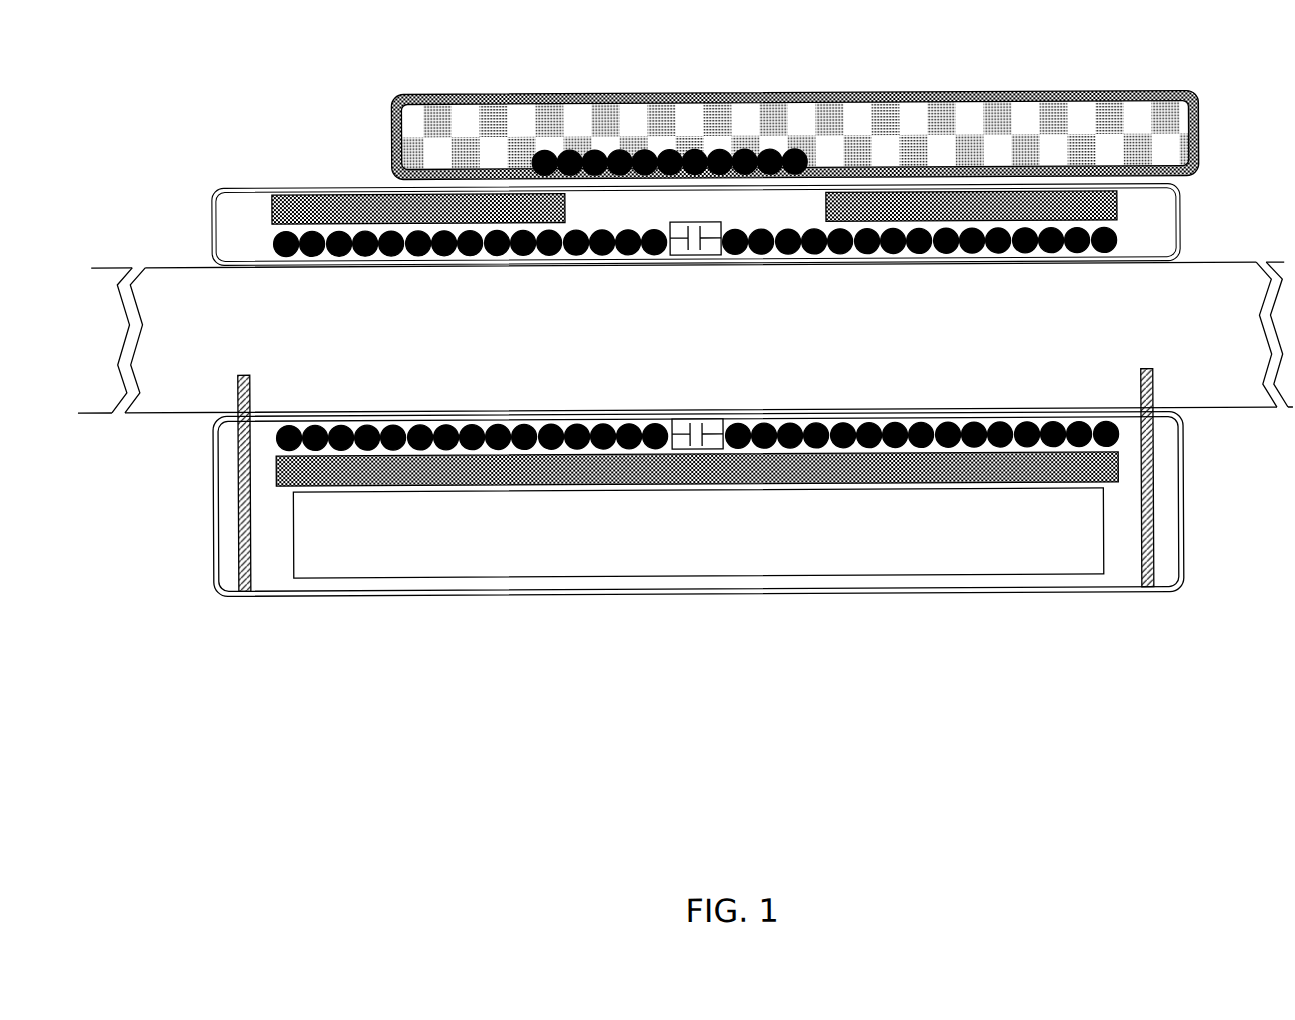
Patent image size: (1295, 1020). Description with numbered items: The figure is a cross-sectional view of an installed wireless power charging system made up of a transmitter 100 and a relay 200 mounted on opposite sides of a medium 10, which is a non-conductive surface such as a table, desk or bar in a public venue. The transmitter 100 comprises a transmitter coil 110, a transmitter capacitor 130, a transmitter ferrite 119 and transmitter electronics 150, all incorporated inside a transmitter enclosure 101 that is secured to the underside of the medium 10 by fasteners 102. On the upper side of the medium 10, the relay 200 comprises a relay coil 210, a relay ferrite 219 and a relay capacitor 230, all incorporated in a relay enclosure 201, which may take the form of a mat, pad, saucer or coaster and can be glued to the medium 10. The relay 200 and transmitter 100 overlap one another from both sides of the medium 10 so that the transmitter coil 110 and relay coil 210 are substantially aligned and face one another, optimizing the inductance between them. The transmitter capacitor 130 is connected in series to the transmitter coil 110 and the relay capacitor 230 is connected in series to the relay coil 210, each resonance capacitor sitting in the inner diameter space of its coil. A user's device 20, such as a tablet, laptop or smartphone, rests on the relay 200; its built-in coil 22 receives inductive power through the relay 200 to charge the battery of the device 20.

The medium 10 is at (147, 414).
The device 20 is at (591, 93).
The built-in coil 22 is at (736, 140).
The transmitter 100 is at (216, 596).
The transmitter enclosure 101 is at (213, 527).
The fasteners 102 is at (244, 592).
The transmitter coil 110 is at (589, 424).
The transmitter ferrite 119 is at (1120, 472).
The transmitter capacitor 130 is at (713, 432).
The transmitter electronics 150 is at (490, 578).
The relay 200 is at (212, 187).
The relay enclosure 201 is at (303, 186).
The relay coil 210 is at (438, 262).
The relay ferrite 219 is at (366, 194).
The relay capacitor 230 is at (681, 258).